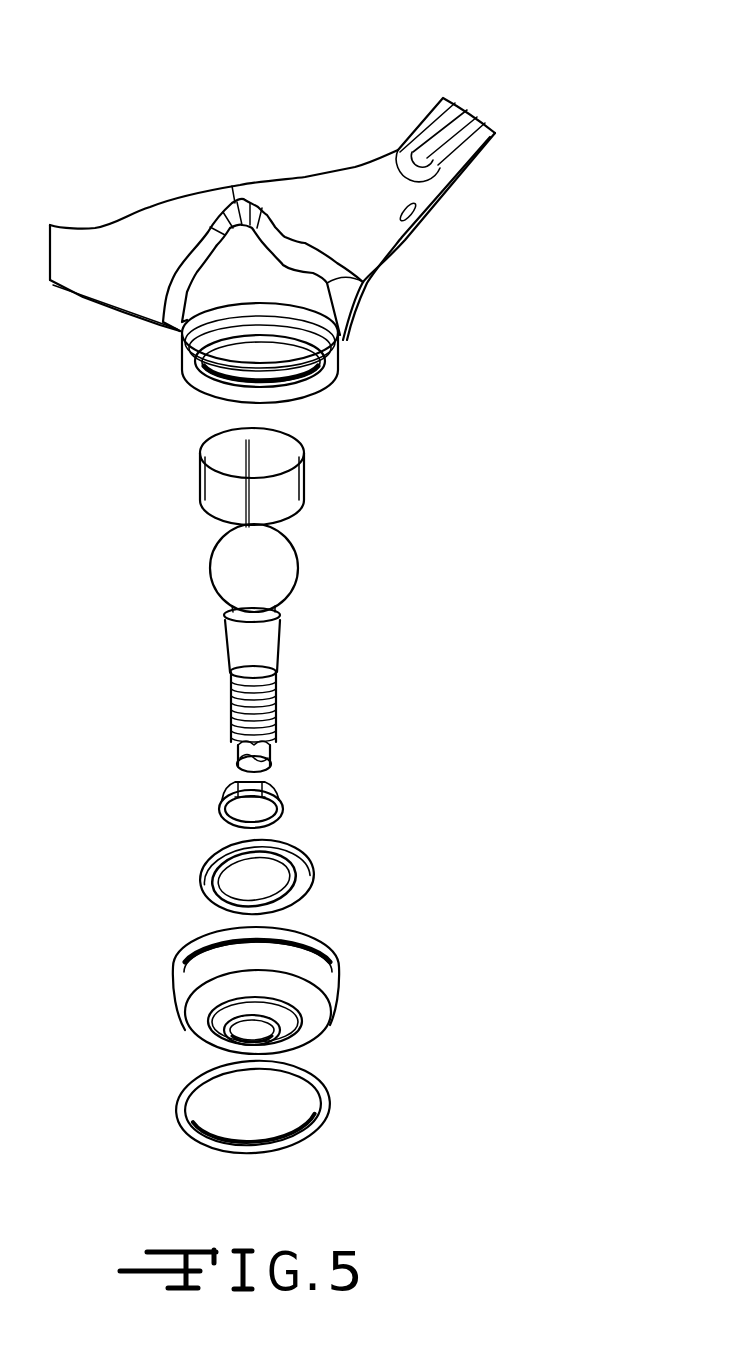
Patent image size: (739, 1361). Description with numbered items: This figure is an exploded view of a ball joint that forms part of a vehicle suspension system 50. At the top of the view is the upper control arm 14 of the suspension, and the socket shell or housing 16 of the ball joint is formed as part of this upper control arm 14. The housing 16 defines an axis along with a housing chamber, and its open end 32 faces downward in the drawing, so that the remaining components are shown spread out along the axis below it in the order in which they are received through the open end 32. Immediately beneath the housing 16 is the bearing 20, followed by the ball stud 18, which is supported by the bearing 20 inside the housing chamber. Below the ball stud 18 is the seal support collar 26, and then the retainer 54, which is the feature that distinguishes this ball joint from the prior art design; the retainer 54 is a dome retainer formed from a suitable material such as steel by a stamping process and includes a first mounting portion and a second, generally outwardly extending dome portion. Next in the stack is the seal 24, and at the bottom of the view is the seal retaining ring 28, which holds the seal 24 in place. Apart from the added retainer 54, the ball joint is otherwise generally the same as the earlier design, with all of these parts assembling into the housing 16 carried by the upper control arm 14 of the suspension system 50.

The vehicle suspension system 50 is at (363, 97).
The upper control arm 14 is at (425, 226).
The socket shell or housing 16 is at (337, 310).
The open end 32 is at (197, 380).
The bearing 20 is at (305, 480).
The ball stud 18 is at (280, 643).
The seal support collar 26 is at (280, 792).
The retainer 54 is at (313, 862).
The seal 24 is at (337, 987).
The seal retaining ring 28 is at (330, 1100).